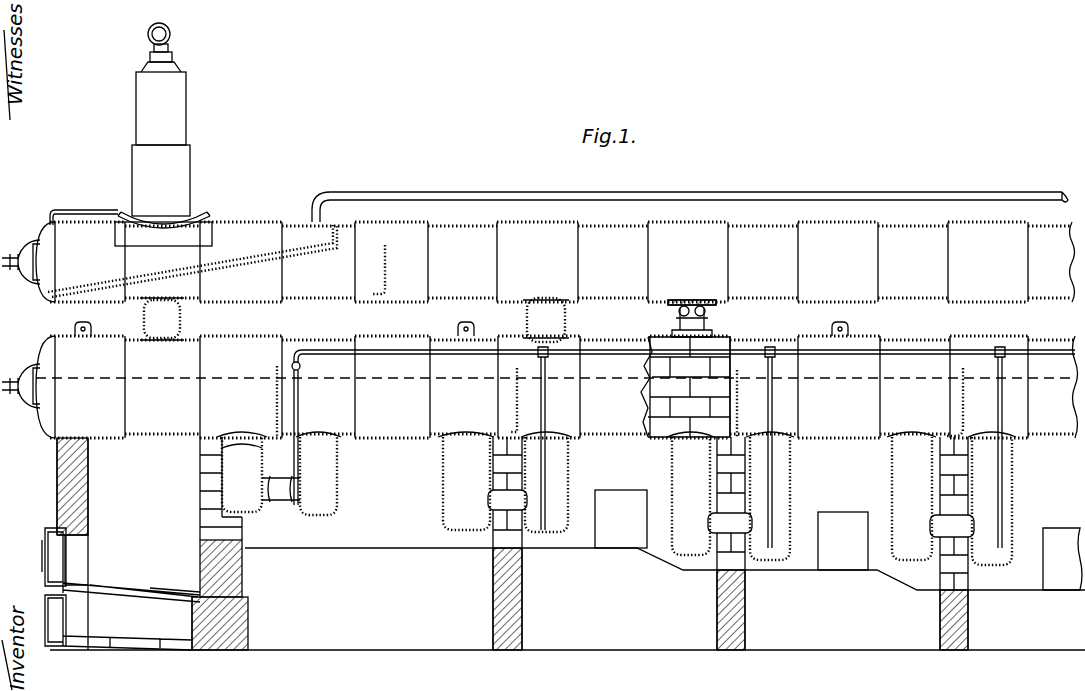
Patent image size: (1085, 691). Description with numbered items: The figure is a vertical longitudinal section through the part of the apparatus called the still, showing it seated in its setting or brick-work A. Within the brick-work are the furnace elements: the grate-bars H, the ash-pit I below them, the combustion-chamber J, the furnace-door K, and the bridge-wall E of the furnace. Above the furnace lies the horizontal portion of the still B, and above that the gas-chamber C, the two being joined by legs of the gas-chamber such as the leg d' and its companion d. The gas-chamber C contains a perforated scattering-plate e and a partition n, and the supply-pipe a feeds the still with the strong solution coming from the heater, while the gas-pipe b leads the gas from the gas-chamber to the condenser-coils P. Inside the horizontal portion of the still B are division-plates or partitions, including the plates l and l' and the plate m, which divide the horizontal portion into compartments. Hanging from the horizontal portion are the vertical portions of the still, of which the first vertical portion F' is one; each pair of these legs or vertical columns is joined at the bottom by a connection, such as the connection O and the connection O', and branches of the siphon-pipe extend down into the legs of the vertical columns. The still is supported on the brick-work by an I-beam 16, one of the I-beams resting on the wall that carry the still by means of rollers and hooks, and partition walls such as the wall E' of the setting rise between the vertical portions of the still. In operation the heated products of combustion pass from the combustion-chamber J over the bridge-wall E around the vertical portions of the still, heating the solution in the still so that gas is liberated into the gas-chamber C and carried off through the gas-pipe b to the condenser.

The gas-chamber C is at (538, 262).
The supply-pipe a is at (690, 197).
The perforated scattering-plate e is at (192, 261).
The partition n is at (388, 269).
The combustion-chamber J is at (163, 154).
The gas-pipe b is at (171, 39).
The connecting neck d is at (162, 319).
The leg of gas-chamber d' is at (546, 320).
The I-beam 16 is at (716, 322).
The horizontal portion of still B is at (540, 380).
The condenser-coils P is at (683, 361).
The internal pipe l is at (264, 401).
The division-plate l' is at (495, 400).
The division-plate m is at (967, 402).
The vertical portion of still F' is at (242, 472).
The connecting pipe O is at (279, 503).
The connection between legs O' is at (507, 500).
The bridge-wall E is at (206, 543).
The partition wall E' is at (517, 543).
The setting or brick-work A is at (567, 570).
The furnace-door K is at (44, 553).
The grate-bars H is at (131, 600).
The ash-pit I is at (118, 622).